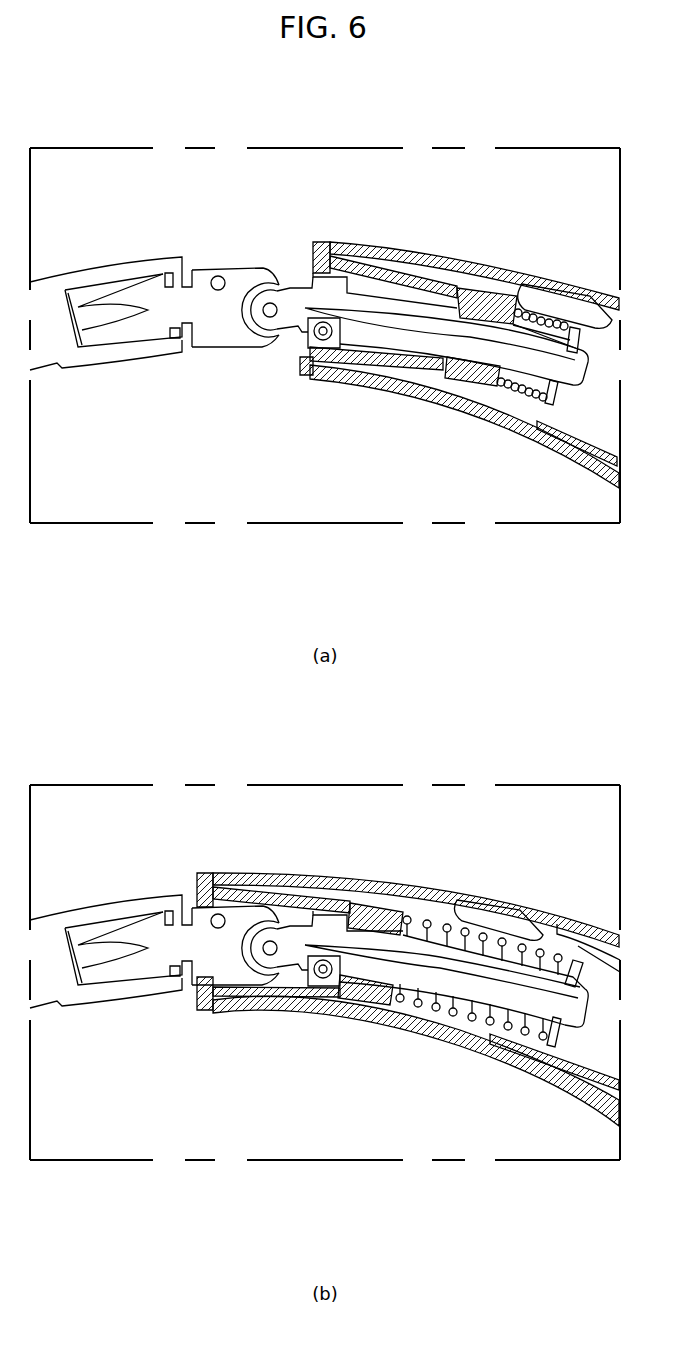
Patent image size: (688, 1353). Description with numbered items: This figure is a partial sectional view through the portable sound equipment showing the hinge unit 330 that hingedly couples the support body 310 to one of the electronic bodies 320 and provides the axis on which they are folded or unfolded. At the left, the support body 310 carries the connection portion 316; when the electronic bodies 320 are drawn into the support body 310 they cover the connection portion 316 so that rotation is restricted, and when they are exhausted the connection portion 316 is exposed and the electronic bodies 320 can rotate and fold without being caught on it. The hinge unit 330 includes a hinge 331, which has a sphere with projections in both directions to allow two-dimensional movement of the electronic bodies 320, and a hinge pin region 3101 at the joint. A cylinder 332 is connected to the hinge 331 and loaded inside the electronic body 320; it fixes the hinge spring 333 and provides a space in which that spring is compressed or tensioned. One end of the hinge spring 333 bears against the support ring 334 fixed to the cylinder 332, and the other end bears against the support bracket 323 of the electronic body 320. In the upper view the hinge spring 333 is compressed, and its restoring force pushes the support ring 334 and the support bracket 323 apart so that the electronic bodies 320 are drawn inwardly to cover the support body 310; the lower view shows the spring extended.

The support body 310 is at (98, 262).
The connection portion 316 is at (162, 317).
The hinge pin hook 3101 is at (280, 273).
The electronic body 320 is at (354, 240).
The support bracket 323 is at (478, 303).
The hinge unit 330 is at (565, 588).
The hinge 331 is at (272, 318).
The cylinder 332 is at (418, 322).
The hinge spring 333 is at (498, 385).
The support ring 334 is at (553, 387).